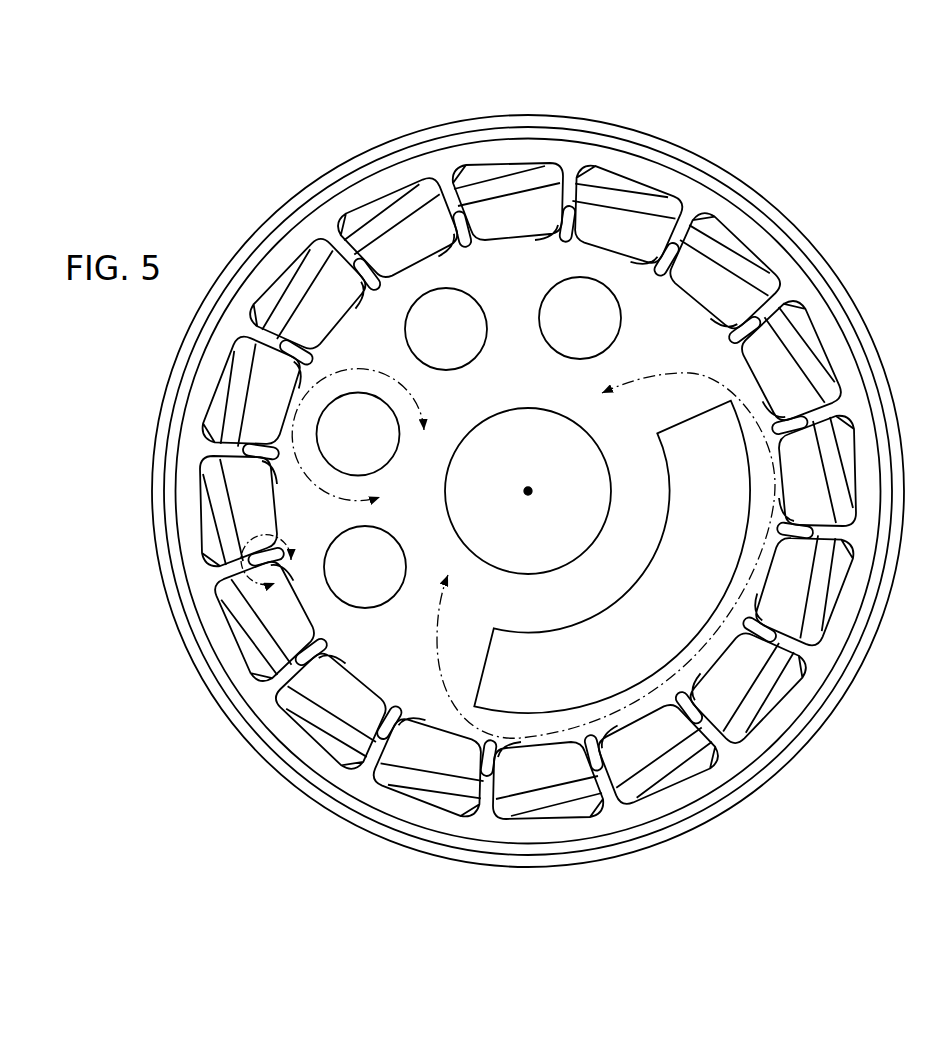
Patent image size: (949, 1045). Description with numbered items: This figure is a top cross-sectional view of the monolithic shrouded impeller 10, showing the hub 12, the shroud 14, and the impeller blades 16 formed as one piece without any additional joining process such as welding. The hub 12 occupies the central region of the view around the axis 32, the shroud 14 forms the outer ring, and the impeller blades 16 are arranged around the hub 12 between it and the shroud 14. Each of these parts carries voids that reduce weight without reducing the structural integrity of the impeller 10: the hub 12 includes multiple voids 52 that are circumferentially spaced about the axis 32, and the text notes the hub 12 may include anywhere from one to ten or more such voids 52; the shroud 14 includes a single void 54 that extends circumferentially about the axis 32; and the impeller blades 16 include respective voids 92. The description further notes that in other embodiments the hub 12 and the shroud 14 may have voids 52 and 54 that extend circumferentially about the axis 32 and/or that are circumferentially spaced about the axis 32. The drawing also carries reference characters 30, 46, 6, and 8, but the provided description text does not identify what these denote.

The monolithic shrouded impeller 10 is at (884, 234).
The hub 12 is at (625, 283).
The shroud 14 is at (663, 838).
The impeller blades 16 is at (452, 202).
The central shaft bore 30 is at (513, 540).
The axis 32 is at (532, 491).
The permanent magnets 46 is at (733, 295).
The voids 52 is at (485, 308).
The void 54 is at (327, 197).
The voids 92 is at (572, 200).
The section line 6 is at (363, 439).
The section line 8 is at (275, 573).